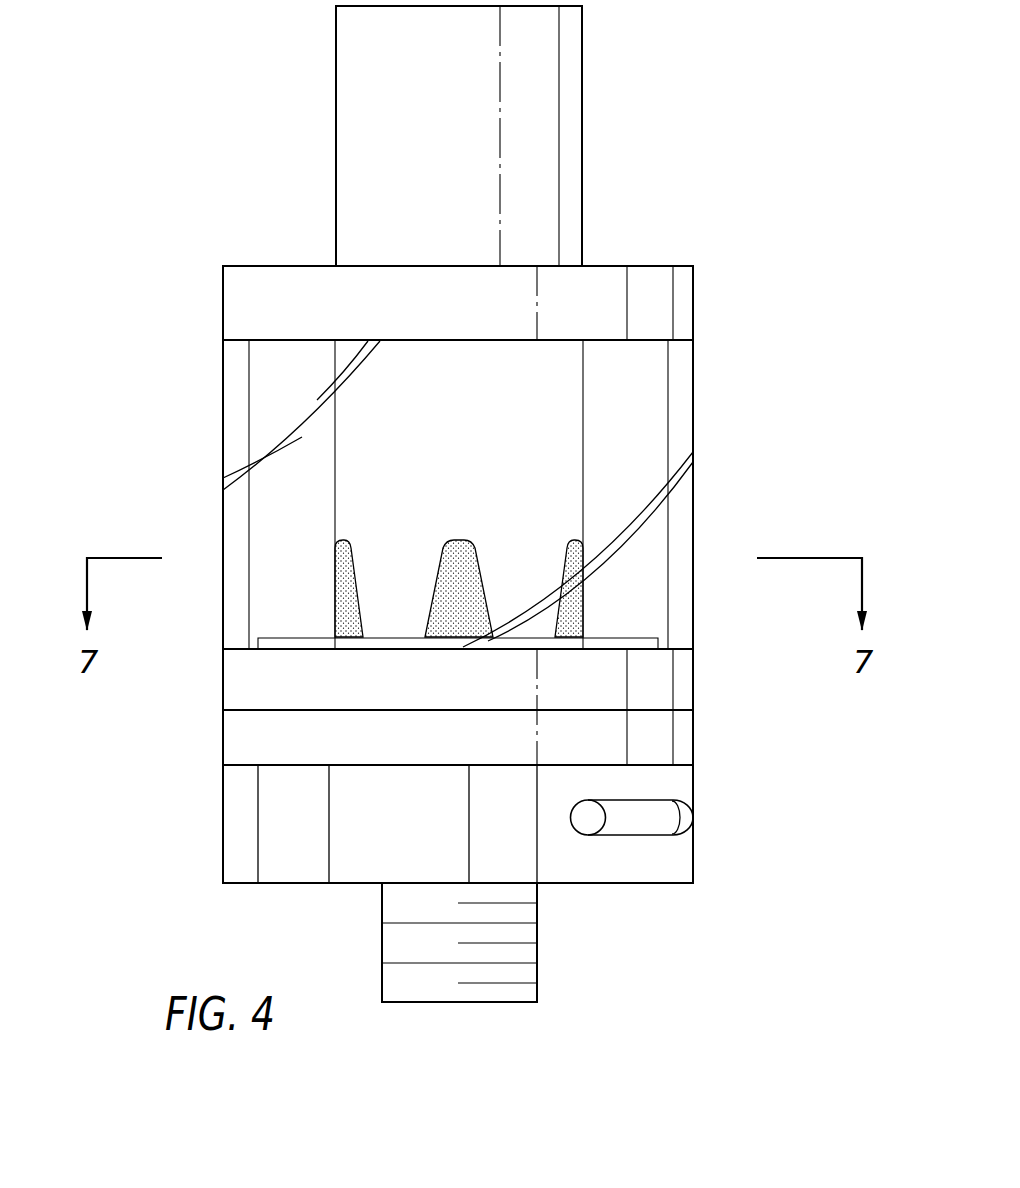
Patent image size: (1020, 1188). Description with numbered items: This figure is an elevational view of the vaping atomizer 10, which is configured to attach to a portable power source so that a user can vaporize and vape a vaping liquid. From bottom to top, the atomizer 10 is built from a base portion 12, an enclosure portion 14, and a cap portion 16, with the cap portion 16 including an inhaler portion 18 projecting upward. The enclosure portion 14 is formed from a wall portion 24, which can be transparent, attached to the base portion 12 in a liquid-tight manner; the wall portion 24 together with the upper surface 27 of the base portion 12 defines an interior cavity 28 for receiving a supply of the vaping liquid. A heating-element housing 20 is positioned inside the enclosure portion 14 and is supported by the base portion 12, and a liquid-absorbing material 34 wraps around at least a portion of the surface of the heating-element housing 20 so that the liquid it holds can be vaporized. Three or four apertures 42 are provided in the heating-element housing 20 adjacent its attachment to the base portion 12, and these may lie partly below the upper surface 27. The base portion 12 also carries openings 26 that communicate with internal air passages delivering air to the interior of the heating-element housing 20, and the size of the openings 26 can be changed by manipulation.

The vaping atomizer 10 is at (186, 405).
The base portion 12 is at (697, 863).
The enclosure portion 14 is at (697, 513).
The cap portion 16 is at (697, 302).
The inhaler portion 18 is at (589, 131).
The heating-element housing 20 is at (547, 392).
The wall portion 24 is at (693, 547).
The openings 26 is at (642, 800).
The upper surface 27 is at (620, 637).
The interior cavity 28 is at (642, 440).
The liquid-absorbing material 34 is at (470, 612).
The apertures 42 is at (442, 560).